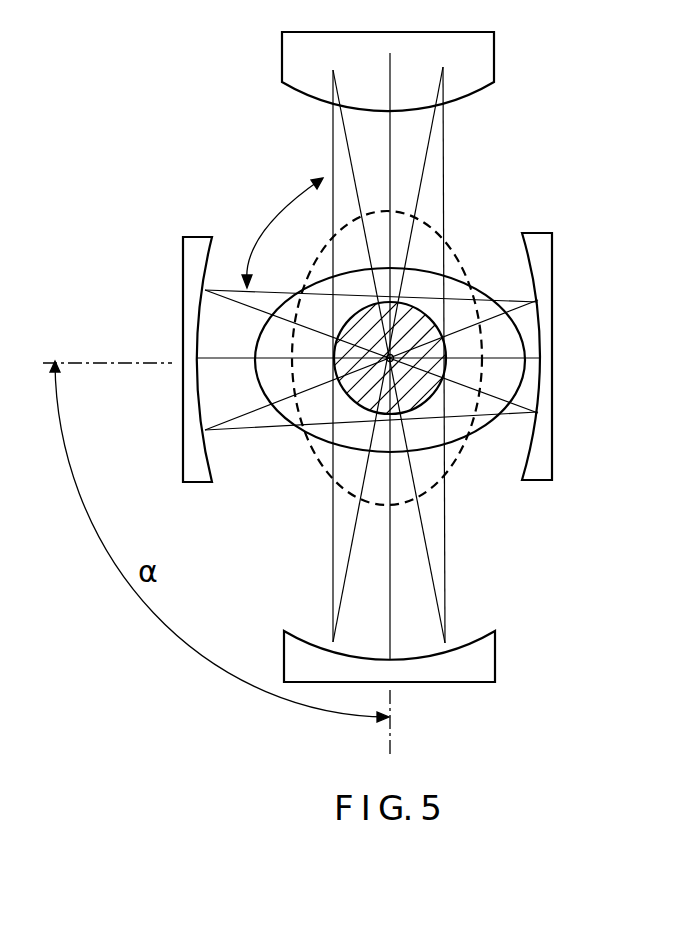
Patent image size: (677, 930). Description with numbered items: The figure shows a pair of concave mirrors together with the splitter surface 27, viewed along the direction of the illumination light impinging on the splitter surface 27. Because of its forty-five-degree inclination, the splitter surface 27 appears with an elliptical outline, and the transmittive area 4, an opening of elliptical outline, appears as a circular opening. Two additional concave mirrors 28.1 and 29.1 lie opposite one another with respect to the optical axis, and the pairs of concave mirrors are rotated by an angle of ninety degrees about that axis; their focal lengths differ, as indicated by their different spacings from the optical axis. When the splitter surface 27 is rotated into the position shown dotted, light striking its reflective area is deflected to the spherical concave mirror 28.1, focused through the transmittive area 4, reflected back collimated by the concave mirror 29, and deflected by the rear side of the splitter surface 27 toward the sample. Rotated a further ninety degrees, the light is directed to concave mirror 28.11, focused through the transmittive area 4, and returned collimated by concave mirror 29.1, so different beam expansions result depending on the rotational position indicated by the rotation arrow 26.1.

The concave mirror 28.1 is at (494, 47).
The concave mirror 29 is at (497, 666).
The concave mirror 28.11 is at (203, 236).
The concave mirror 29.1 is at (538, 476).
The splitter surface 27 is at (423, 255).
The transmittive area 4 is at (448, 426).
The rotation direction arrow 26.1 is at (338, 146).